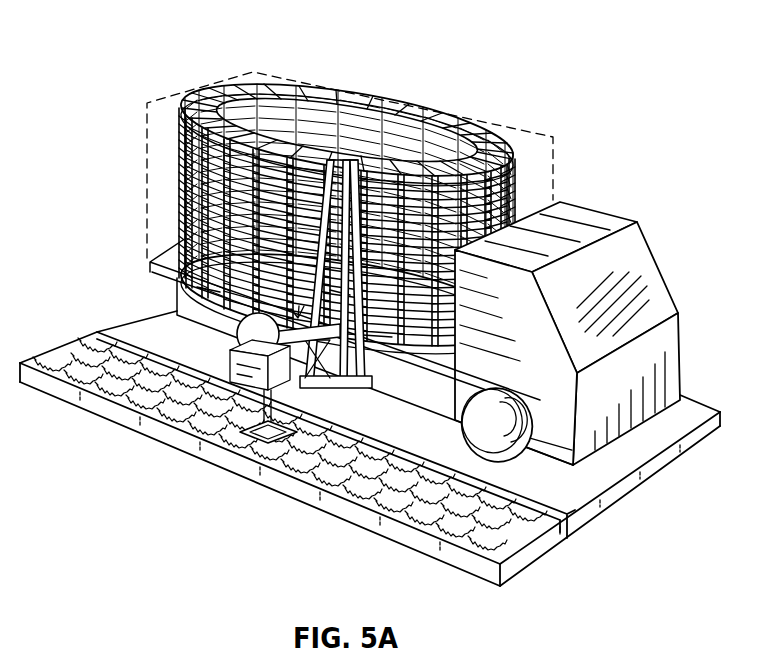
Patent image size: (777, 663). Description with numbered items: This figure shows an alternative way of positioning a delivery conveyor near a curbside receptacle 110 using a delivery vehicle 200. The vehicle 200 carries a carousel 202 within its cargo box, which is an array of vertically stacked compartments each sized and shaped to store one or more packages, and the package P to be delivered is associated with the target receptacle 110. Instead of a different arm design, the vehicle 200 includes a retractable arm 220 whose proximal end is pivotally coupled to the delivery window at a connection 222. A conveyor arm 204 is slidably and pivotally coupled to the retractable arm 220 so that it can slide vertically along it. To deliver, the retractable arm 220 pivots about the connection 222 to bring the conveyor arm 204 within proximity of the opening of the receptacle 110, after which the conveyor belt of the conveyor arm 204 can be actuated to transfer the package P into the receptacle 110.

The vehicle 200 is at (406, 274).
The carousel 202 is at (197, 107).
The connection 222 is at (333, 167).
The conveyor arm 204 is at (340, 392).
The retractable arm 220 is at (298, 388).
The receptacle 110 is at (237, 400).
The package P is at (300, 318).